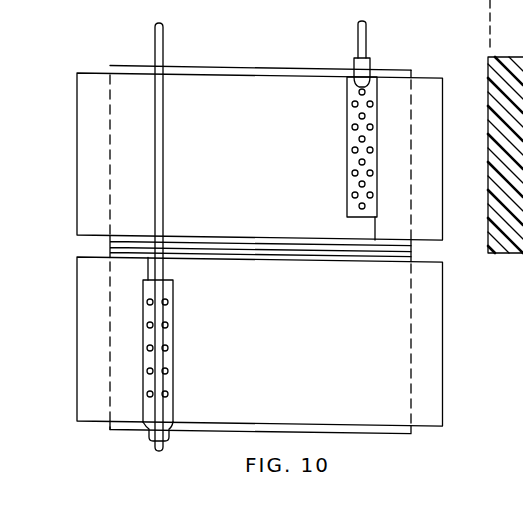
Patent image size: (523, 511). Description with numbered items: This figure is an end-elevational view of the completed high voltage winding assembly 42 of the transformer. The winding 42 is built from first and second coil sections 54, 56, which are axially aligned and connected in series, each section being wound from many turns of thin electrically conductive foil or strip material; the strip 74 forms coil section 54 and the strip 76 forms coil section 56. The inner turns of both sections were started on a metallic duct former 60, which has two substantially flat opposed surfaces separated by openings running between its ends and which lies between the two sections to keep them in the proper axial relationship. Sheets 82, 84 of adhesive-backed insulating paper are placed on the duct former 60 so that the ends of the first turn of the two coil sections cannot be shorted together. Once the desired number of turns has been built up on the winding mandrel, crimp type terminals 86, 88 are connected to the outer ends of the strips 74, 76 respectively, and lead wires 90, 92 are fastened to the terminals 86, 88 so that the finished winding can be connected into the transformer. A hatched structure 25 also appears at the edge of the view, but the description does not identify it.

The wall 25 is at (488, 57).
The high voltage winding 42 is at (206, 461).
The first coil section 54 is at (441, 70).
The second coil section 56 is at (441, 451).
The duct former 60 is at (329, 51).
The electrically conductive strip 74 is at (443, 136).
The electrically conductive strip 76 is at (77, 413).
The sheet of adhesive backed insulating paper 82 is at (110, 240).
The sheet of adhesive backed insulating paper 84 is at (411, 260).
The crimp type terminal 86 is at (346, 137).
The crimp type terminal 88 is at (174, 318).
The wire 90 is at (367, 31).
The wire 92 is at (164, 36).